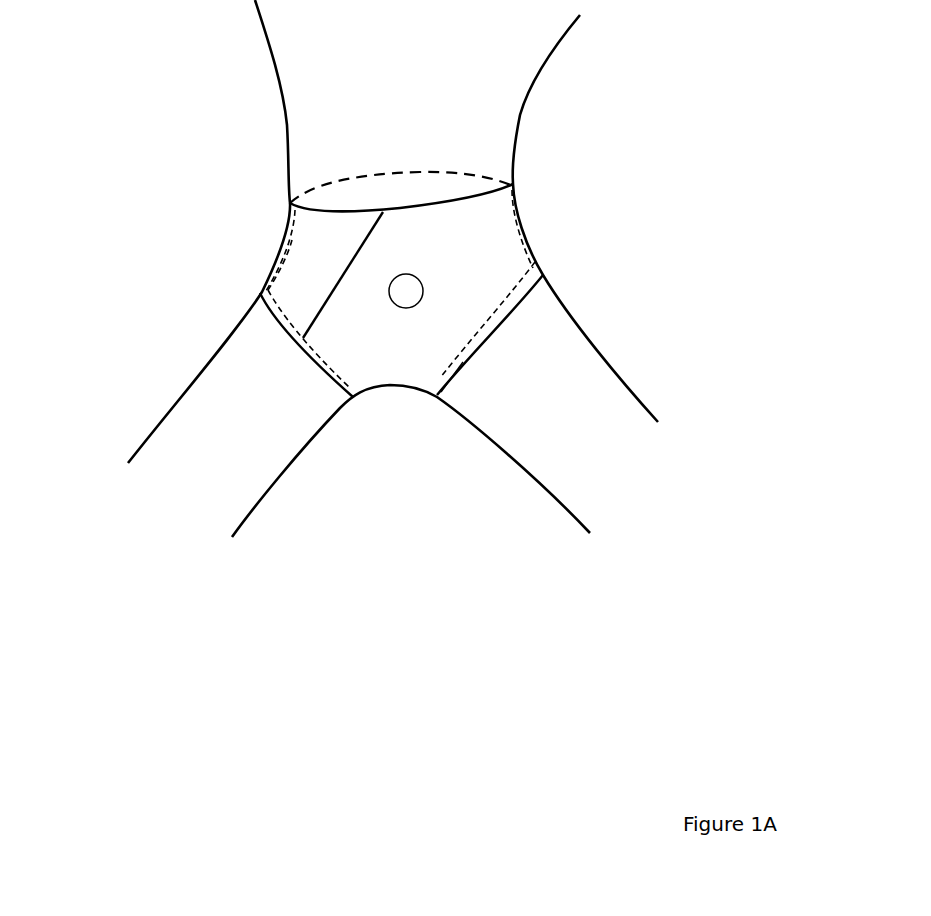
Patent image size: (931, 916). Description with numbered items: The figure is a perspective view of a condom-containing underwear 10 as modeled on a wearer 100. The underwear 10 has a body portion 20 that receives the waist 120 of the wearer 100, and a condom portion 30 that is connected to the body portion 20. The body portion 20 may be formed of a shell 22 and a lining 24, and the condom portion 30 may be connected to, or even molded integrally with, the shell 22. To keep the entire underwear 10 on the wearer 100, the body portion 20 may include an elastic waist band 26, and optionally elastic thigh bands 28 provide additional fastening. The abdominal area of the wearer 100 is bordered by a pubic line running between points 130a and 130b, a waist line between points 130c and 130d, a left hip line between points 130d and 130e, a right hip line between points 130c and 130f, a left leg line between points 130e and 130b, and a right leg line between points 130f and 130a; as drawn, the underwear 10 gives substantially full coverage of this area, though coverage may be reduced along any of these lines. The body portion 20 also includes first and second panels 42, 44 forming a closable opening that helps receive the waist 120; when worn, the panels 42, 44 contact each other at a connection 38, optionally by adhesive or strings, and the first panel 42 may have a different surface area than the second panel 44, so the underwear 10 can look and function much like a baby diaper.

The wearer 100 is at (515, 57).
The condom-containing underwear 10 is at (562, 227).
The waist 120 is at (421, 145).
The elastic waist band 26 is at (478, 173).
The shell 22 is at (280, 228).
The lining 24 is at (277, 263).
The connection 38 is at (350, 268).
The body portion 20 is at (412, 241).
The condom portion 30 is at (432, 277).
The elastic thigh bands 28 is at (297, 355).
The first panel 42 is at (302, 305).
The second panel 44 is at (350, 329).
The pubic line end point 130a is at (357, 403).
The pubic line end point 130b is at (442, 413).
The waist line end point 130c is at (283, 206).
The waist line end point 130d is at (515, 185).
The left hip line end point 130e is at (548, 267).
The right hip line end point 130f is at (238, 293).